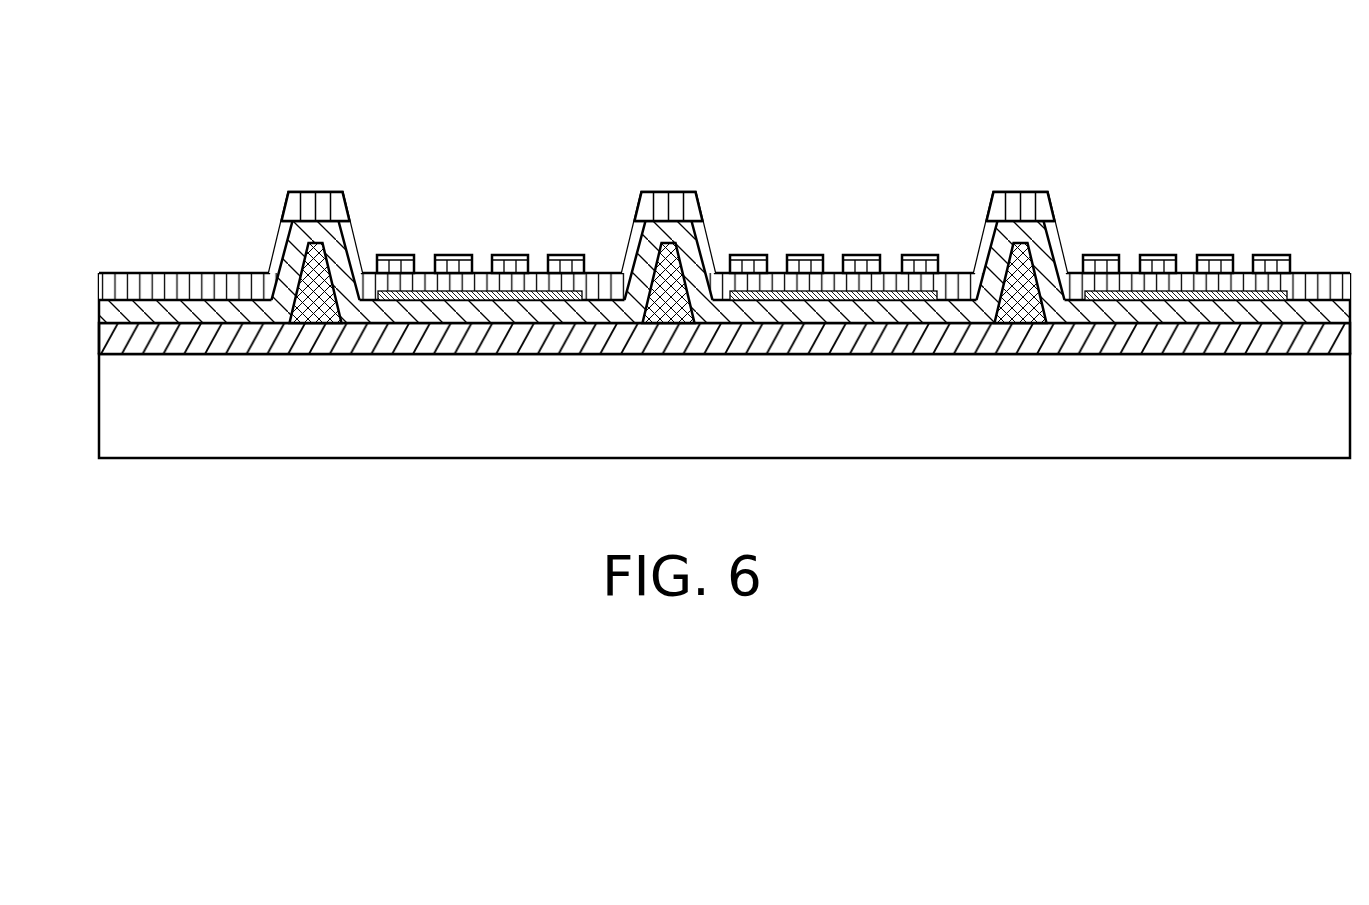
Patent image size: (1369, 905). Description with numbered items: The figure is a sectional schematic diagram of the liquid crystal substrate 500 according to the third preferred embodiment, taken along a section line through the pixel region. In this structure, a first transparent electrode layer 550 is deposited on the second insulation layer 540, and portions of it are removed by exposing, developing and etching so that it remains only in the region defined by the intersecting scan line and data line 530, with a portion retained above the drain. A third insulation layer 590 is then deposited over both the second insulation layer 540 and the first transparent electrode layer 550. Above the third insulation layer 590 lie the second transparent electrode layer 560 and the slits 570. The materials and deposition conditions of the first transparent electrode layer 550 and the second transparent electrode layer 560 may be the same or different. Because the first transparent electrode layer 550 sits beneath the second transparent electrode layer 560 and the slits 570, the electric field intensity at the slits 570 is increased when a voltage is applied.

The liquid crystal substrate 500 is at (121, 70).
The data line 530 is at (668, 277).
The second insulation layer 540 is at (172, 303).
The first transparent electrode layer 550 is at (585, 297).
The second transparent electrode layer 560 is at (405, 255).
The slits 570 is at (426, 262).
The third insulation layer 590 is at (318, 192).